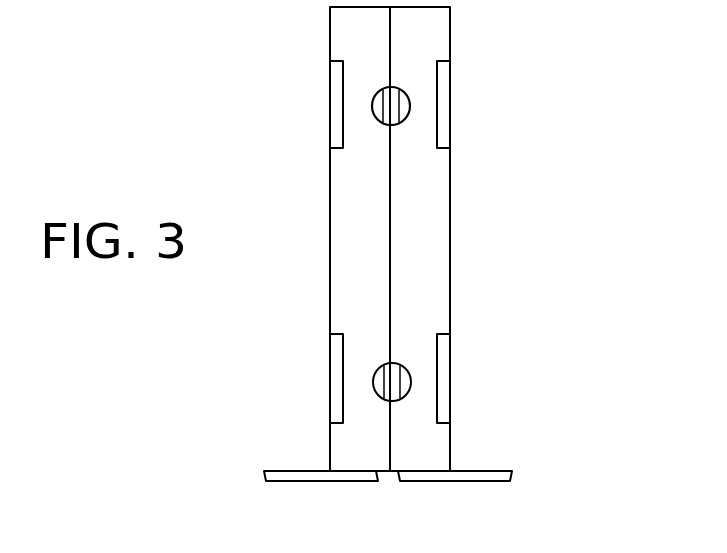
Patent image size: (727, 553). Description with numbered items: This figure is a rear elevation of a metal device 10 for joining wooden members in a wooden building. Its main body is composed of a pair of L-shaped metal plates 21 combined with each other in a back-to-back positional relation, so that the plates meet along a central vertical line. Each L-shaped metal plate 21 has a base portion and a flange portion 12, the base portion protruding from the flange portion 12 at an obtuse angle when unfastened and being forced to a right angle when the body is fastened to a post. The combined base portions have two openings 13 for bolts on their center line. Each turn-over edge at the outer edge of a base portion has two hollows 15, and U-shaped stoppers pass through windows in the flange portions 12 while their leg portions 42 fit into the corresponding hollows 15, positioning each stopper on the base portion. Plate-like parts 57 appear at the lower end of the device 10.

The column assembly 10 is at (553, 63).
The L-shaped metal plate 21 is at (345, 265).
The leg portion 42 is at (337, 92).
The hollow 15 is at (334, 150).
The opening 13 is at (396, 88).
The flange portion 12 is at (384, 128).
The base plate 57 is at (286, 470).